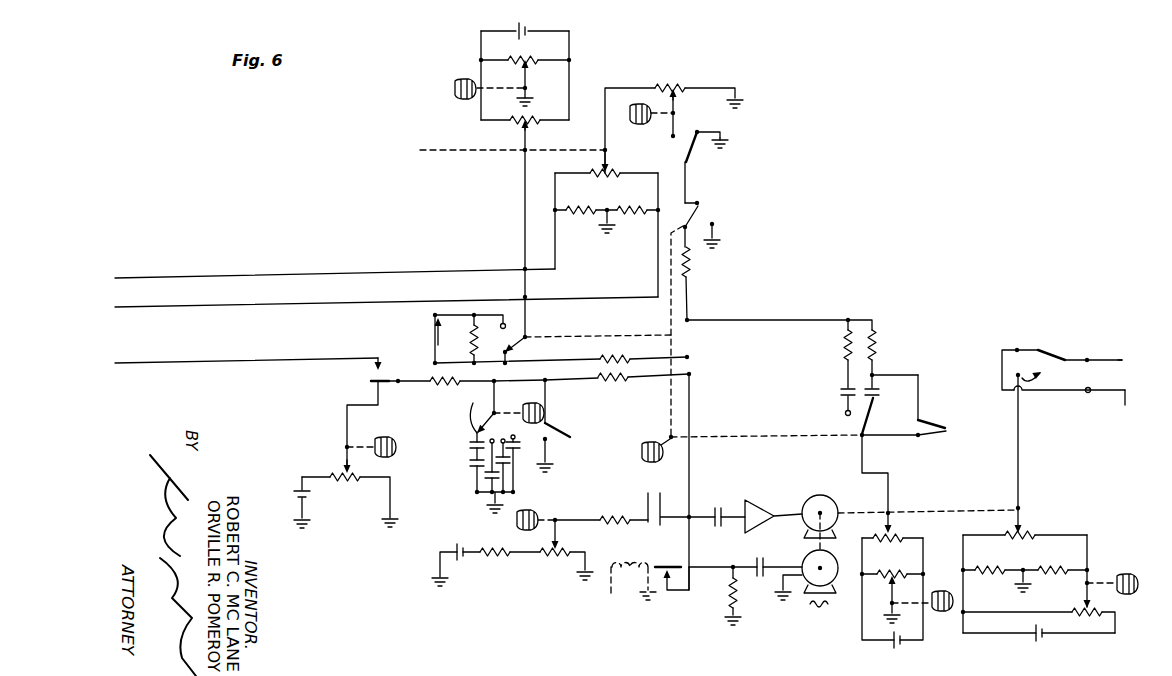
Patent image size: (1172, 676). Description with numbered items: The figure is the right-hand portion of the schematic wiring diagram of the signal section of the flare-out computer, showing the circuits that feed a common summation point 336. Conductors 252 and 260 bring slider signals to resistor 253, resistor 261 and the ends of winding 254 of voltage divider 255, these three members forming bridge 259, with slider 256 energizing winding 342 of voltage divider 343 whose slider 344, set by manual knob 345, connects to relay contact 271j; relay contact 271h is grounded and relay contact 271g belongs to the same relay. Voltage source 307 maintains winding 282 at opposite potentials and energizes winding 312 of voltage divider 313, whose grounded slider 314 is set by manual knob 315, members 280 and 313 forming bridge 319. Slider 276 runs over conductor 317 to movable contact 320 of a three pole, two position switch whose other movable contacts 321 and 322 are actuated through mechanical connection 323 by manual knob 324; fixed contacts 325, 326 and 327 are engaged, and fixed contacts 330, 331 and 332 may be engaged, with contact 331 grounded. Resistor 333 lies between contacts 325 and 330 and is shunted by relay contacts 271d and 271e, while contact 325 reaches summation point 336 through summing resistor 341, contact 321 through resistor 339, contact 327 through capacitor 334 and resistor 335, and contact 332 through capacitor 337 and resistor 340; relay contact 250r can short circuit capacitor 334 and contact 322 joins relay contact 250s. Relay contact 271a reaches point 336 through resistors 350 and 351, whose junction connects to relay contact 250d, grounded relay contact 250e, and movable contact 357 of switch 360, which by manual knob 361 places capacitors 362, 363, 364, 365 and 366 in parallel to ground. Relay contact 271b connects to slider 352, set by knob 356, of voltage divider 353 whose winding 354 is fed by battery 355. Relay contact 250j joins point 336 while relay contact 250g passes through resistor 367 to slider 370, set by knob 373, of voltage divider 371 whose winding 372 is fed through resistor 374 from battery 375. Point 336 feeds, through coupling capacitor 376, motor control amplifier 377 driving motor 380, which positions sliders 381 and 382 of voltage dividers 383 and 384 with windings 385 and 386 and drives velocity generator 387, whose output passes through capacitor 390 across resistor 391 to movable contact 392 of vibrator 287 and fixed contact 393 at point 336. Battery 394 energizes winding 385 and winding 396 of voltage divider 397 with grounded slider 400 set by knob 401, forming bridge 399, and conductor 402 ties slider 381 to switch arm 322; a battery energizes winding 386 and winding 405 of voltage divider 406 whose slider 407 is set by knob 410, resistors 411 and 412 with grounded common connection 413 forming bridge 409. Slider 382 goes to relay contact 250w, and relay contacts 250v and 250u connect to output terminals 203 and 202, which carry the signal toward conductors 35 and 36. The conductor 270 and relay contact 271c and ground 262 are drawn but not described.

The voltage source 307 is at (517, 27).
The voltage divider 313 is at (497, 52).
The winding 312 is at (535, 58).
The slider 314 is at (529, 80).
The manual knob 315 is at (458, 83).
The electric bridge 319 is at (510, 113).
The winding 282 is at (530, 96).
The slider 276 is at (522, 132).
The voltage divider 280 is at (537, 127).
The voltage divider 255 is at (596, 170).
The slider 256 is at (608, 166).
The winding 254 is at (621, 174).
The electrical bridge 259 is at (637, 200).
The resistor 261 is at (578, 214).
The resistor 253 is at (634, 214).
The ground 262 is at (608, 232).
The conductor 317 is at (524, 228).
The winding 342 is at (660, 85).
The voltage divider 343 is at (689, 74).
The slider 344 is at (676, 103).
The manual knob 345 is at (628, 97).
The relay contact 271j is at (688, 130).
The relay contact 271h is at (714, 144).
The relay contact 271g is at (694, 158).
The fixed contact 326 is at (701, 204).
The movable contact 321 is at (700, 221).
The fixed contact 331 is at (715, 228).
The resistor 339 is at (694, 271).
The conductor 260 is at (314, 272).
The conductor 252 is at (389, 301).
The conductor 270 is at (263, 357).
The relay contact 271d is at (432, 322).
The relay contact 271e is at (437, 345).
The switch blade 271c is at (377, 357).
The relay contact 271a is at (372, 380).
The relay contact 271b is at (373, 399).
The fixed contact 330 is at (506, 324).
The resistor 333 is at (478, 341).
The movable contact 320 is at (528, 334).
The fixed contact 325 is at (509, 352).
The summing resistor 341 is at (628, 345).
The mechanical connection 323 is at (668, 412).
The manual knob 324 is at (648, 444).
The resistor 350 is at (432, 385).
The resistor 351 is at (601, 379).
The switch 360 is at (490, 405).
The manual knob 361 is at (526, 405).
The movable contact 357 is at (472, 404).
The relay contact 250d is at (556, 431).
The relay contact 250e is at (550, 444).
The slider 352 is at (344, 448).
The manual knob 356 is at (386, 437).
The voltage divider 353 is at (360, 465).
The winding 354 is at (336, 482).
The battery 355 is at (294, 493).
The capacitor 362 is at (470, 444).
The capacitor 363 is at (470, 463).
The capacitor 364 is at (485, 476).
The capacitor 365 is at (506, 470).
The capacitor 366 is at (517, 450).
The manual knob 373 is at (517, 522).
The resistor 367 is at (598, 518).
The slider 370 is at (557, 528).
The voltage divider 371 is at (547, 545).
The battery 375 is at (456, 549).
The resistor 374 is at (500, 558).
The winding 372 is at (556, 558).
The relay contact 250g is at (646, 503).
The relay contact 250j is at (667, 482).
The summation point 336 is at (686, 519).
The coupling capacitor 376 is at (717, 507).
The motor control amplifier 377 is at (757, 503).
The motor 380 is at (813, 500).
The movable contact 392 is at (667, 565).
The fixed contact 393 is at (669, 584).
The vibrator 287 is at (622, 580).
The capacitor 390 is at (754, 560).
The velocity generator 387 is at (805, 558).
The resistor 391 is at (740, 595).
The slider 400 is at (828, 603).
The resistor 340 is at (842, 340).
The resistor 335 is at (876, 338).
The capacitor 337 is at (841, 392).
The fixed contact 332 is at (845, 414).
The capacitor 334 is at (876, 392).
The fixed contact 327 is at (874, 414).
The movable contact 322 is at (859, 434).
The conductor 402 is at (883, 468).
The relay contact 250r is at (927, 420).
The relay contact 250s is at (928, 437).
The relay contact 250v is at (1015, 349).
The relay contact 250u is at (1056, 350).
The output terminal 202 is at (1087, 357).
The conductor 36 is at (1118, 358).
The relay contact 250w is at (1034, 377).
The output terminal 203 is at (1086, 393).
The conductor 35 is at (1127, 404).
The slider 381 is at (885, 520).
The voltage divider 383 is at (899, 525).
The winding 385 is at (890, 553).
The winding 396 is at (882, 572).
The electric bridge 399 is at (896, 573).
The voltage divider 397 is at (913, 580).
The manual knob 401 is at (936, 612).
The battery 394 is at (892, 647).
The slider 382 is at (1014, 512).
The voltage divider 384 is at (1027, 518).
The winding 386 is at (1033, 534).
The electric bridge 409 is at (1130, 565).
The resistor 411 is at (992, 568).
The resistor 412 is at (1050, 568).
The grounded common connection 413 is at (1018, 582).
The manual knob 410 is at (1136, 580).
The slider 407 is at (1083, 600).
The winding 405 is at (1103, 610).
The voltage divider 406 is at (1082, 612).